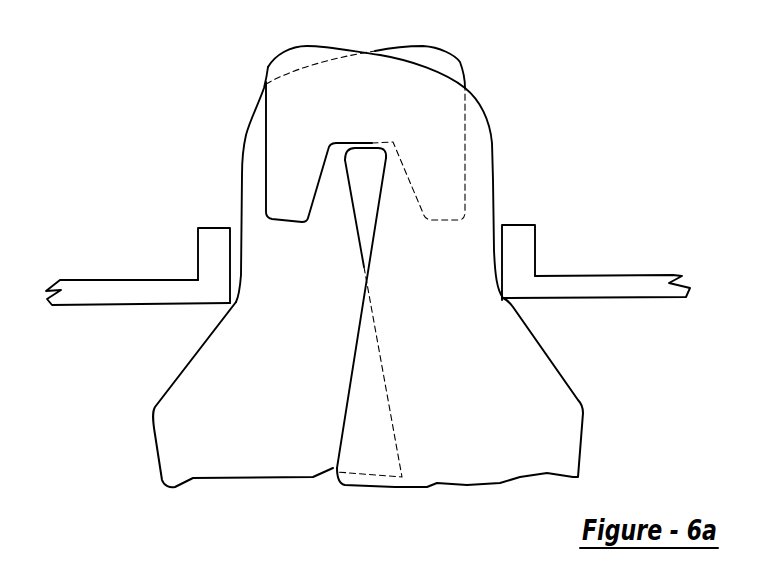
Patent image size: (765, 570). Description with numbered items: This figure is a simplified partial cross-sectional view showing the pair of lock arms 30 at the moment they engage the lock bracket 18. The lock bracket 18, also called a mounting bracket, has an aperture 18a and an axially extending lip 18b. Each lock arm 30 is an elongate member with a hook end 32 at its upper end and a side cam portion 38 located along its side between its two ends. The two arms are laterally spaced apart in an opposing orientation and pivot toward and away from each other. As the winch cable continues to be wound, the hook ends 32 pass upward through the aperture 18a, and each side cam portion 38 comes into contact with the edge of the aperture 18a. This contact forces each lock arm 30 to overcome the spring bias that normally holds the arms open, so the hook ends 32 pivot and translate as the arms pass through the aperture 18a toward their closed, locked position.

The lock arm 30 is at (343, 254).
The hook end 32 is at (268, 66).
The side cam portion 38 is at (185, 362).
The lock bracket 18 is at (626, 276).
The aperture 18a is at (503, 262).
The lip 18b is at (213, 228).